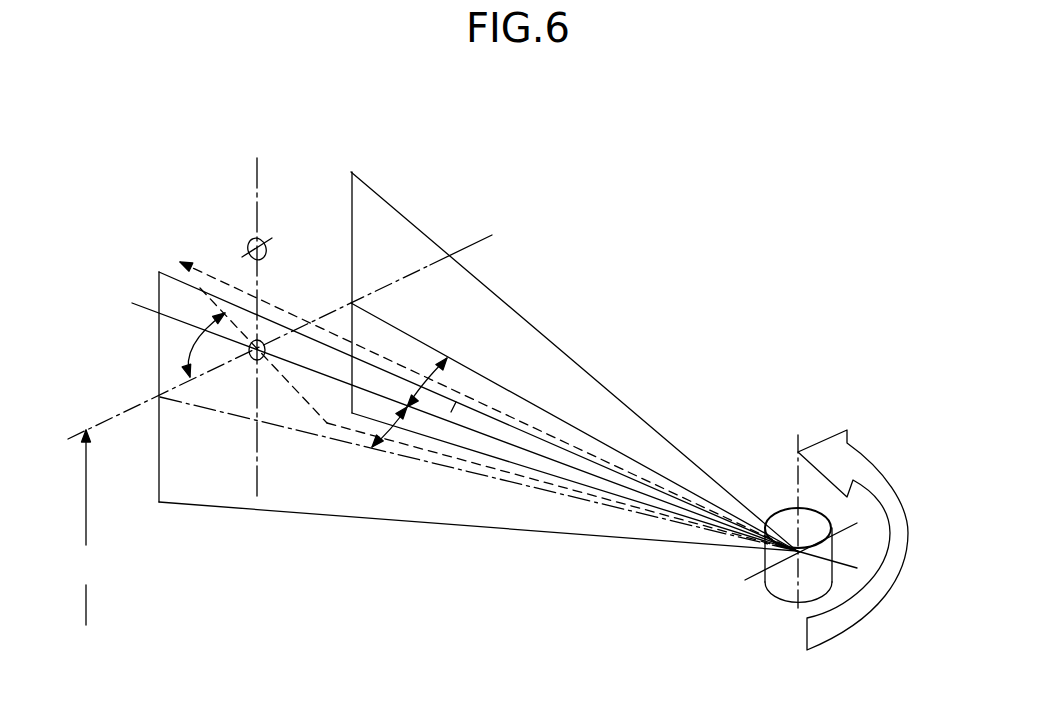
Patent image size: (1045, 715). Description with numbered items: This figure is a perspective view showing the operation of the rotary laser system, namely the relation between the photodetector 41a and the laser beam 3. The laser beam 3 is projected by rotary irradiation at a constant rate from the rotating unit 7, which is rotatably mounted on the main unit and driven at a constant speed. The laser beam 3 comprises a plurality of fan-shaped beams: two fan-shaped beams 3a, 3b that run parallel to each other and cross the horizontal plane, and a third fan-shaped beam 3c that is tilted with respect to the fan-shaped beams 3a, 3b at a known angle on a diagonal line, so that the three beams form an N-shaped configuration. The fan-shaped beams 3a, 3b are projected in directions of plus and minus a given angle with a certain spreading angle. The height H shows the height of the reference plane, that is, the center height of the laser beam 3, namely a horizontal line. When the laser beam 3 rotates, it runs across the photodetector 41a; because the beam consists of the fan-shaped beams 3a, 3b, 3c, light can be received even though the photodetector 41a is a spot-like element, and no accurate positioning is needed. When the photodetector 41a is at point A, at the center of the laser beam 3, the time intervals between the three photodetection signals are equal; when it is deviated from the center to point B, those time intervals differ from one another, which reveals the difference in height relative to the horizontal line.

The laser beam 3 is at (575, 360).
The fan-shaped beam 3a is at (303, 488).
The fan-shaped beam 3b is at (412, 241).
The fan-shaped beam 3c is at (196, 272).
The rotating unit 7 is at (770, 510).
The photodetector 41a is at (260, 340).
The point A is at (254, 358).
The point B is at (250, 243).
The height H is at (85, 527).